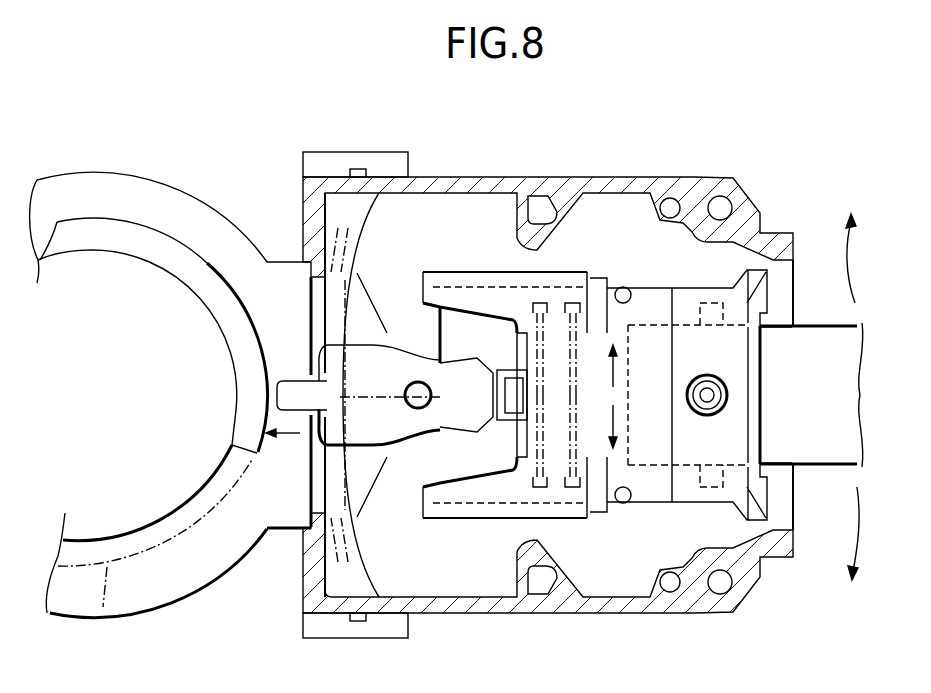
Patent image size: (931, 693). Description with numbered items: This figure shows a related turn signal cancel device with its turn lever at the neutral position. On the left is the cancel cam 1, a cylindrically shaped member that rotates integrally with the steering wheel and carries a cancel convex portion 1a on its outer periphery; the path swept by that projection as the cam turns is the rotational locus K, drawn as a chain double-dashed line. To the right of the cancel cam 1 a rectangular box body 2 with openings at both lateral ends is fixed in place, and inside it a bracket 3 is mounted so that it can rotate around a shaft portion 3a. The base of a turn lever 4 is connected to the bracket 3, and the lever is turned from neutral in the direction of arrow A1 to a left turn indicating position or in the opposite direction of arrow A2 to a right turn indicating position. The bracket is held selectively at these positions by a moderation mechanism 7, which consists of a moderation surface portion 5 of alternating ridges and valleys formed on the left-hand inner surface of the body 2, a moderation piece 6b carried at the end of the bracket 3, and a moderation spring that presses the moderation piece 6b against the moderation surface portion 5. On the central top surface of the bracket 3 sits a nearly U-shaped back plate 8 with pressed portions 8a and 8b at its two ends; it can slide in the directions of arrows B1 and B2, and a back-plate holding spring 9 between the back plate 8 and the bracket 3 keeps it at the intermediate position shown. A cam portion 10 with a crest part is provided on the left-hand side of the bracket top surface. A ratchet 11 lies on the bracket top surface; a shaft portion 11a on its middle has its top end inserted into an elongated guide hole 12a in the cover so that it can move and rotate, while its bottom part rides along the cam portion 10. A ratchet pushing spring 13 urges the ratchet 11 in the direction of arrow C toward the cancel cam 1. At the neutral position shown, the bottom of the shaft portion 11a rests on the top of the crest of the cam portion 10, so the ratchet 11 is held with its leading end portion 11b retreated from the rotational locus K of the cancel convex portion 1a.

The cancel cam 1 is at (197, 300).
The cancel convex portion 1a is at (160, 232).
The body 2 is at (612, 176).
The bracket 3 is at (663, 288).
The shaft portion 3a is at (707, 375).
The turn lever 4 is at (833, 323).
The moderation surface portion 5 is at (302, 495).
The moderation piece 6b is at (305, 348).
The moderation mechanism 7 is at (310, 458).
The back plate 8 is at (580, 272).
The pressed portion 8a is at (435, 316).
The pressed portion 8b is at (423, 495).
The back-plate holding spring 9 is at (520, 472).
The cam portion 10 is at (400, 437).
The ratchet 11 is at (398, 358).
The shaft portion 11a is at (442, 416).
The leading end portion 11b is at (268, 392).
The guide hole 12a is at (445, 353).
The ratchet pushing spring 13 is at (300, 218).
The arrow A1 is at (862, 236).
The arrow A2 is at (862, 555).
The arrow B1 is at (613, 370).
The arrow B2 is at (613, 421).
The arrow C is at (284, 433).
The rotational locus K is at (102, 620).